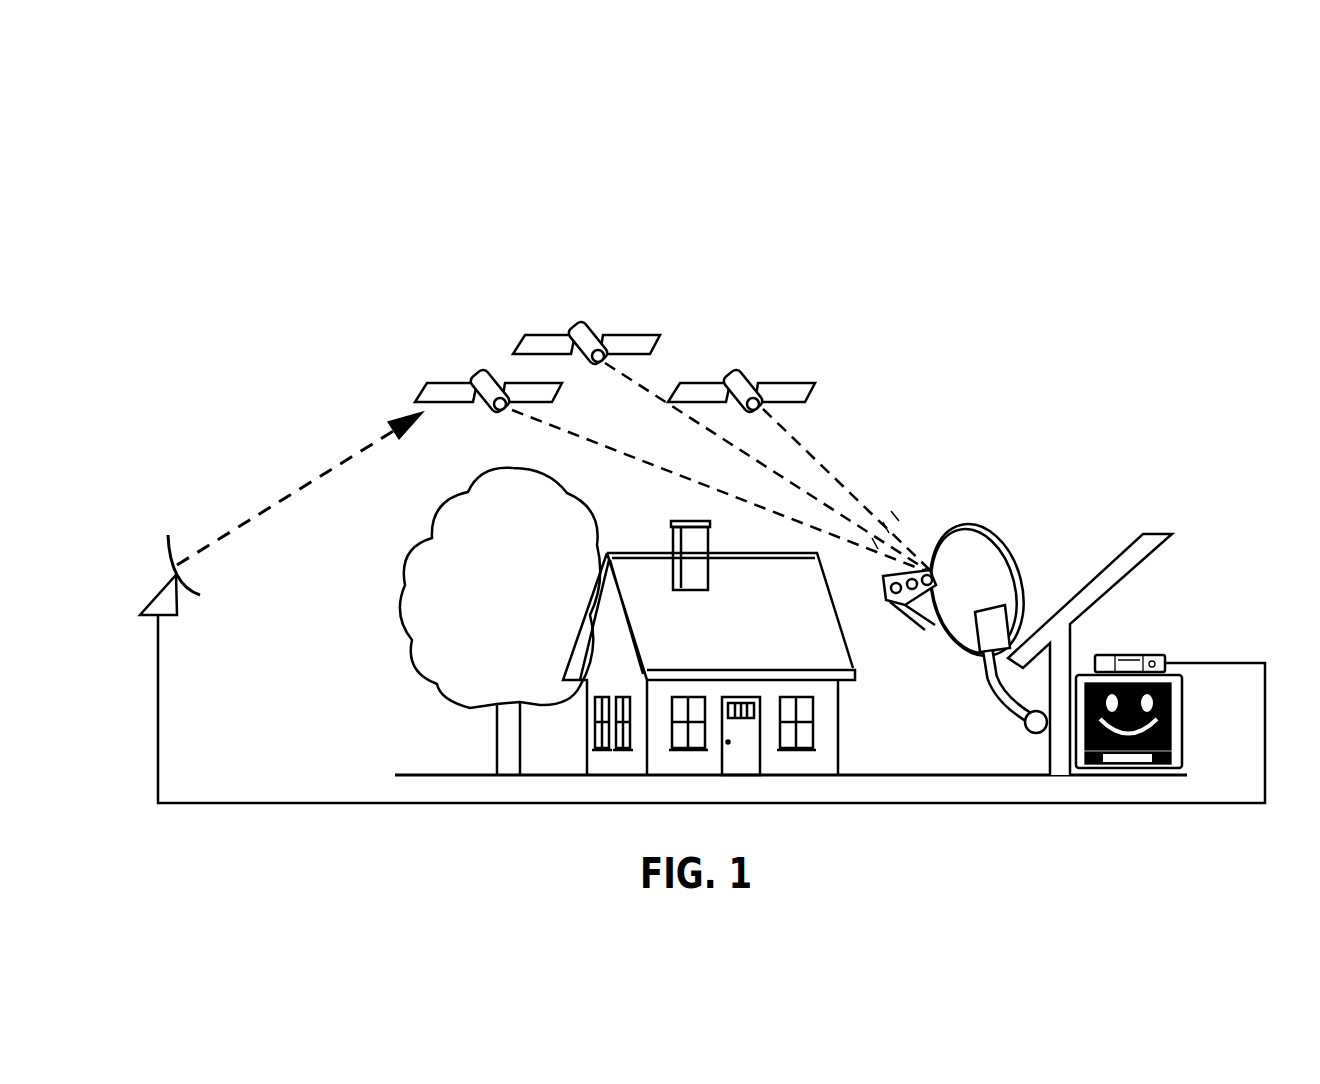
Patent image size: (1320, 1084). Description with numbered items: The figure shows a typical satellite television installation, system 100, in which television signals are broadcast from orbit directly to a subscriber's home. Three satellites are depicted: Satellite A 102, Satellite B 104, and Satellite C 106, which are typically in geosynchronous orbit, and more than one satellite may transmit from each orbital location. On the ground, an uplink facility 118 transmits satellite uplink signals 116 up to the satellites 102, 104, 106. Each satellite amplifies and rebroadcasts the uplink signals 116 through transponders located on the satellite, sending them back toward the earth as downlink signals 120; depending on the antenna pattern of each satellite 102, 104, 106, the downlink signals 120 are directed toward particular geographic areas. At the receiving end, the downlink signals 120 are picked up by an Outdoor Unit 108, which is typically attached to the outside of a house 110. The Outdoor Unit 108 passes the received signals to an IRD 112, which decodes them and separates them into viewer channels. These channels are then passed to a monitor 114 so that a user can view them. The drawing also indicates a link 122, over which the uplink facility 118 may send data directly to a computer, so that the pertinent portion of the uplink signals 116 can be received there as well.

The system 100 is at (702, 175).
The Satellite A 102 is at (487, 365).
The Satellite B 104 is at (762, 377).
The Satellite C 106 is at (628, 332).
The Outdoor Unit 108 is at (987, 525).
The house 110 is at (1117, 557).
The IRD 112 is at (1130, 653).
The monitor 114 is at (1183, 708).
The satellite uplink signals 116 is at (300, 488).
The uplink facility 118 is at (162, 593).
The downlink signals 120 is at (877, 497).
The link 122 is at (1205, 660).